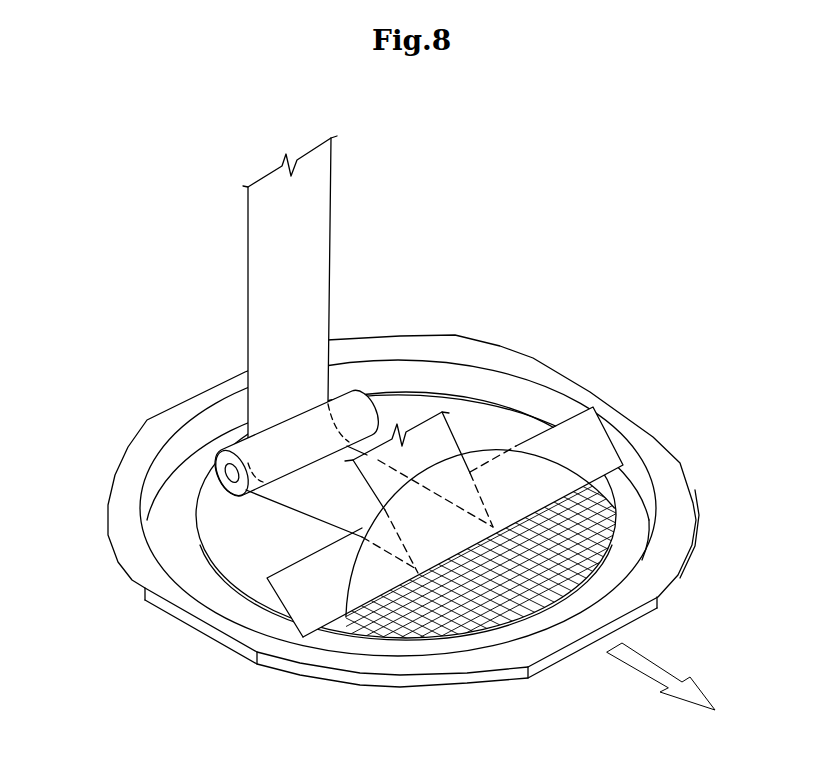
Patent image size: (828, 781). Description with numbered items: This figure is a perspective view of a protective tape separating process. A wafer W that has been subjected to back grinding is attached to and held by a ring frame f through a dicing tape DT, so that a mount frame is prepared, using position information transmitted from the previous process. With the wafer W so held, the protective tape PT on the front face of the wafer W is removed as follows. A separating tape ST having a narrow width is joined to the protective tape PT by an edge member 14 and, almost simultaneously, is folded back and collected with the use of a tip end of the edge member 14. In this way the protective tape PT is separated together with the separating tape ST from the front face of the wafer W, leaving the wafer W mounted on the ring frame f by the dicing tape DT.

The separating tape ST is at (321, 243).
The protective tape PT is at (485, 443).
The dicing tape DT is at (158, 502).
The ring frame f is at (673, 467).
The edge member 14 is at (320, 630).
The wafer W is at (415, 637).